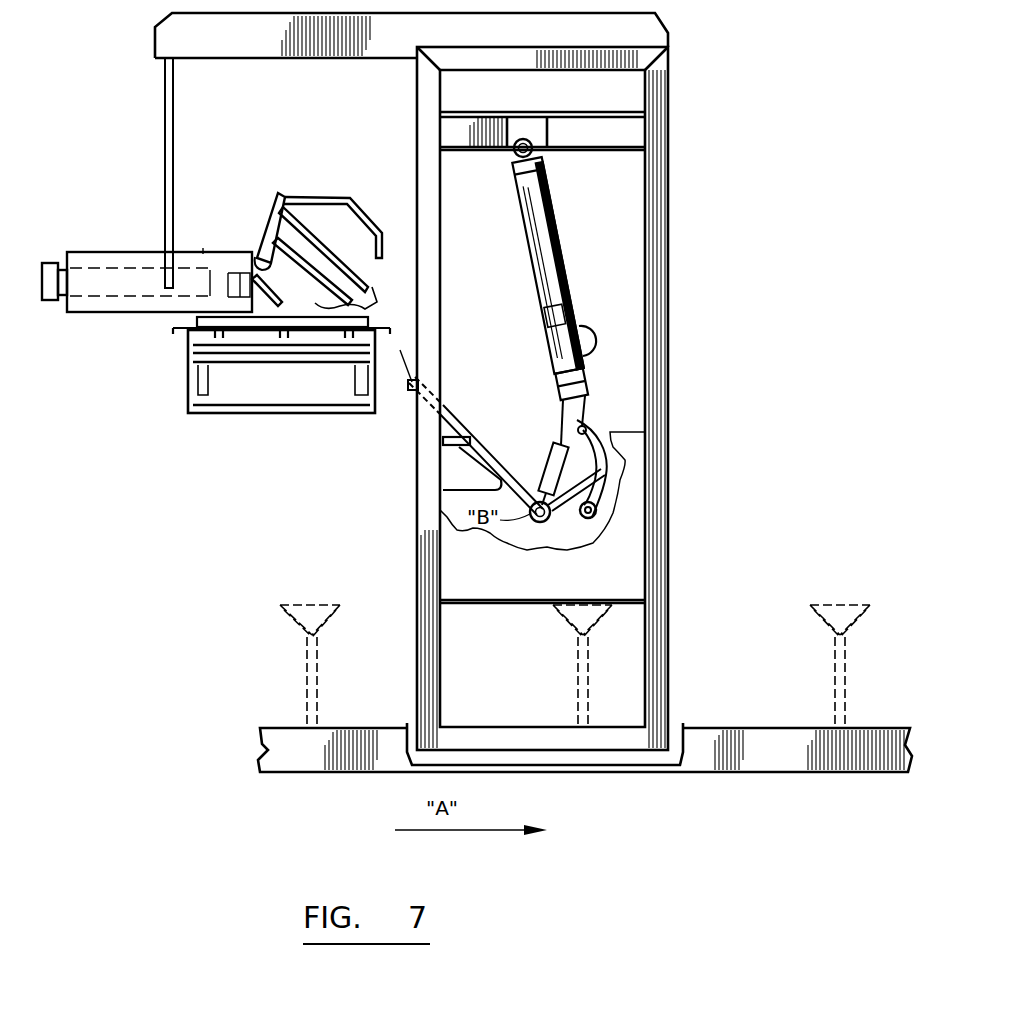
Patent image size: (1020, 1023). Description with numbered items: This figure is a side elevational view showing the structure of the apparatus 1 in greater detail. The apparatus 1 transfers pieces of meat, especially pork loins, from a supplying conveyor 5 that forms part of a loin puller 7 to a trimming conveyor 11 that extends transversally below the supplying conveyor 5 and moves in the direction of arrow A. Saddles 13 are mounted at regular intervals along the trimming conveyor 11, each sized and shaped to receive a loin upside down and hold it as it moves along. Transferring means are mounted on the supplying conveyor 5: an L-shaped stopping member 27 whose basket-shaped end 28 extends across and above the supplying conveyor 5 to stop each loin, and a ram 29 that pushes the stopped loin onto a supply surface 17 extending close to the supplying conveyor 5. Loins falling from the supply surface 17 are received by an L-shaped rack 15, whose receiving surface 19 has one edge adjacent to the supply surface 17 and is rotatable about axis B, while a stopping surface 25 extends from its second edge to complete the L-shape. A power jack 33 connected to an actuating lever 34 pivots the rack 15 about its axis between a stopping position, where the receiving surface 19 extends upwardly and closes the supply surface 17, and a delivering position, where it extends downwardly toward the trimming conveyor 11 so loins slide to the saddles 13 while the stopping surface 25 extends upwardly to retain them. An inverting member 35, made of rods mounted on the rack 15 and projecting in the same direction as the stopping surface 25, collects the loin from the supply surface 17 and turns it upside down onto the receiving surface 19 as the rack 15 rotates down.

The apparatus 1 is at (312, 464).
The supplying conveyor 5 is at (190, 337).
The loin puller 7 is at (184, 414).
The trimming conveyor 11 is at (766, 727).
The saddles 13 is at (321, 631).
The L-shaped rack 15 is at (596, 360).
The supply surface 17 is at (447, 424).
The receiving surface 19 is at (552, 441).
The stopping surface 25 is at (570, 300).
The L-shaped stopping member 27 is at (335, 192).
The end 28 is at (330, 286).
The ram 29 is at (103, 252).
The power jack 33 is at (557, 228).
The actuating lever 34 is at (602, 432).
The inverting member 35 is at (443, 462).